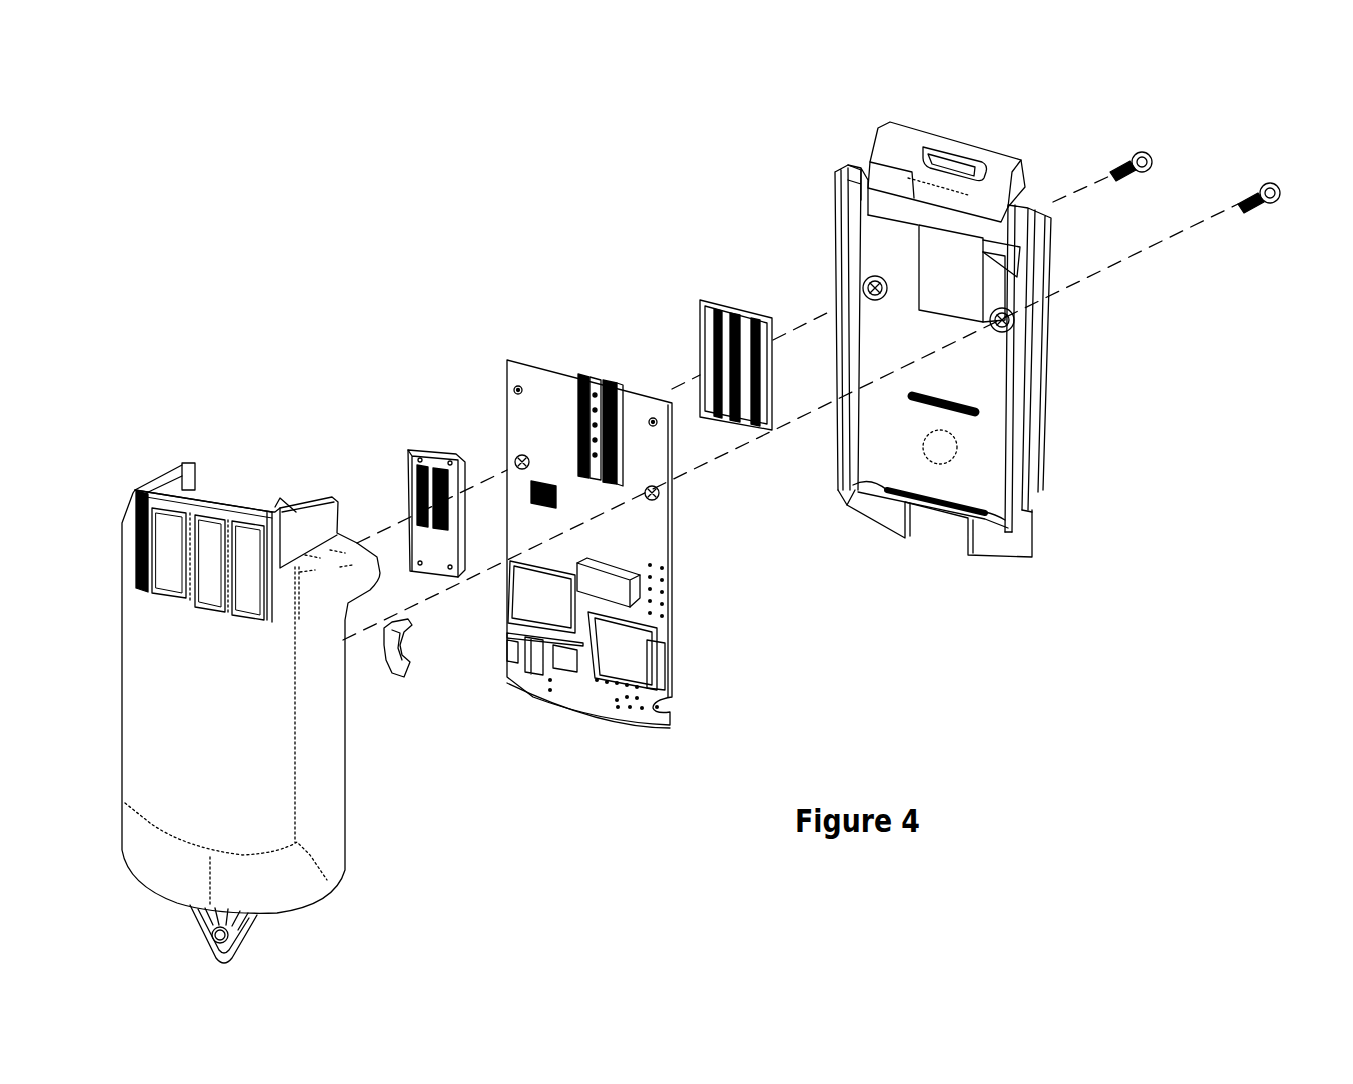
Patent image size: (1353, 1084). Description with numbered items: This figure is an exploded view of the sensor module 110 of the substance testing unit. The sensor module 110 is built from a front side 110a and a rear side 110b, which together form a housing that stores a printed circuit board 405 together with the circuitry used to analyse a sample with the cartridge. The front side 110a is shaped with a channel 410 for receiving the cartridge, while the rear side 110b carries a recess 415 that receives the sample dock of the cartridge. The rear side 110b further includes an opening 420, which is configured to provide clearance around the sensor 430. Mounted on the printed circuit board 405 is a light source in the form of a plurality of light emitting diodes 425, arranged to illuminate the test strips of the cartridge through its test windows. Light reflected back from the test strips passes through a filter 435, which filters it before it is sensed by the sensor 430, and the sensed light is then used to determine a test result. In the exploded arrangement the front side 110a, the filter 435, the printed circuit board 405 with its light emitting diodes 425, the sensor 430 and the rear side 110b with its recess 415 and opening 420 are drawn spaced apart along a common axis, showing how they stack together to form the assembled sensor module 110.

The sensor module 110 is at (840, 63).
The front side 110a is at (327, 843).
The rear side 110b is at (1032, 502).
The printed circuit board 405 is at (674, 671).
The channel 410 is at (186, 460).
The recess 415 is at (967, 153).
The opening 420 is at (965, 271).
The light emitting diodes 425 is at (589, 372).
The sensor 430 is at (719, 297).
The filter 435 is at (416, 449).